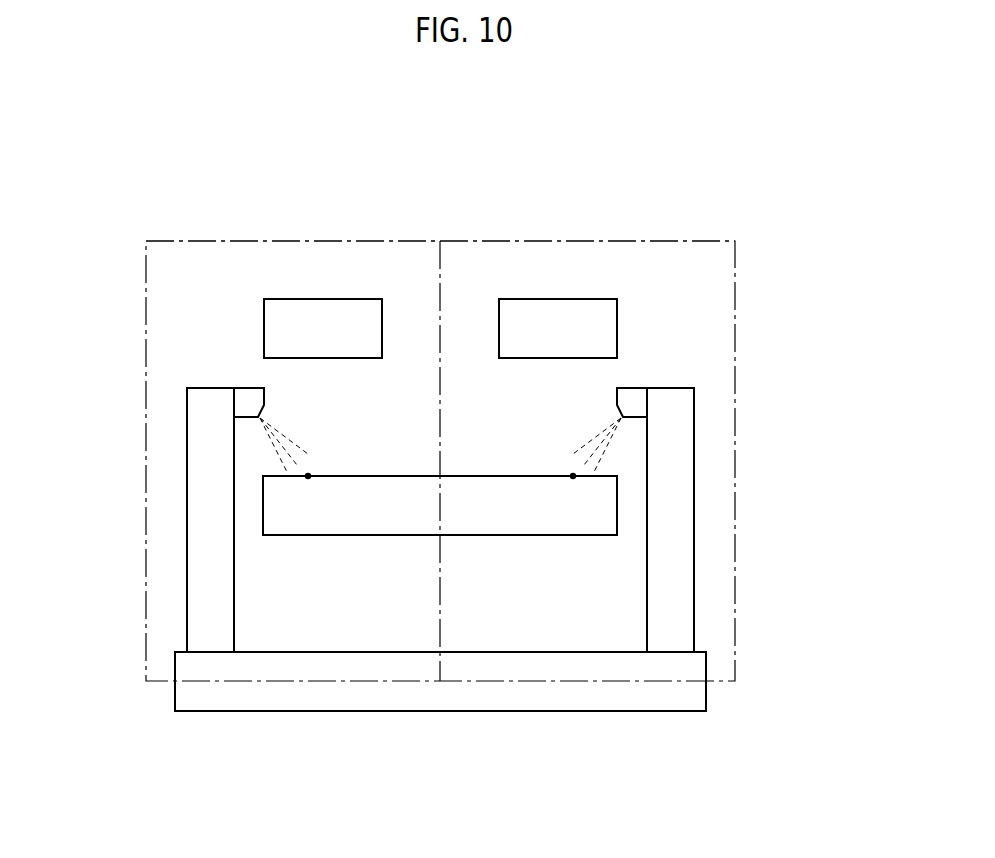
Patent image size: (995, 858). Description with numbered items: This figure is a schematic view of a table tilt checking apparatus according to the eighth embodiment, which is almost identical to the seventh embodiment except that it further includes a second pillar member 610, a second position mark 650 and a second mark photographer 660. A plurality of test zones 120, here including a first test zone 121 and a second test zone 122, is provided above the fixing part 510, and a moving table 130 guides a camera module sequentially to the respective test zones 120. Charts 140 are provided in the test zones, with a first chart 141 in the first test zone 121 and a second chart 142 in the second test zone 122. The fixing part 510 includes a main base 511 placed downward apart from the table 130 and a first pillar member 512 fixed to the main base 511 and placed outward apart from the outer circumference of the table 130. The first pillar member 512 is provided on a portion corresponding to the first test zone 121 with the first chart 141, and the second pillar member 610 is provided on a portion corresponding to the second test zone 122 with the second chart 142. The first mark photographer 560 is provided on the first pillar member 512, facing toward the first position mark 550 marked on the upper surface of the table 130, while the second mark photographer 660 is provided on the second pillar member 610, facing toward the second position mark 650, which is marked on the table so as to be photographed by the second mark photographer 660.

The test zones 120 is at (440, 406).
The first test zone 121 is at (643, 241).
The second test zone 122 is at (170, 241).
The table 130 is at (617, 505).
The charts 140 is at (466, 328).
The first chart 141 is at (617, 328).
The second chart 142 is at (264, 328).
The fixing part 510 is at (499, 606).
The main base 511 is at (600, 711).
The first pillar member 512 is at (694, 560).
The first position mark 550 is at (573, 476).
The first mark photographer 560 is at (633, 392).
The second pillar member 610 is at (187, 560).
The second position mark 650 is at (308, 476).
The second mark photographer 660 is at (248, 392).